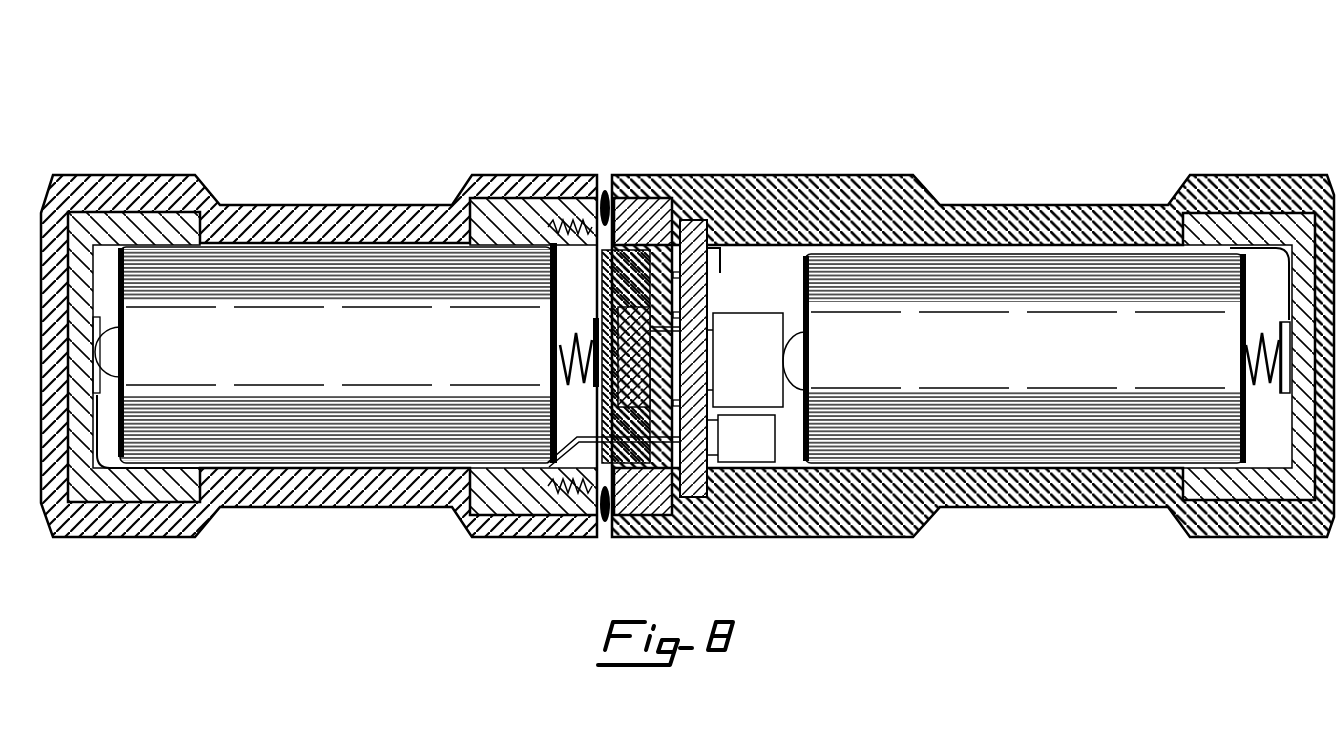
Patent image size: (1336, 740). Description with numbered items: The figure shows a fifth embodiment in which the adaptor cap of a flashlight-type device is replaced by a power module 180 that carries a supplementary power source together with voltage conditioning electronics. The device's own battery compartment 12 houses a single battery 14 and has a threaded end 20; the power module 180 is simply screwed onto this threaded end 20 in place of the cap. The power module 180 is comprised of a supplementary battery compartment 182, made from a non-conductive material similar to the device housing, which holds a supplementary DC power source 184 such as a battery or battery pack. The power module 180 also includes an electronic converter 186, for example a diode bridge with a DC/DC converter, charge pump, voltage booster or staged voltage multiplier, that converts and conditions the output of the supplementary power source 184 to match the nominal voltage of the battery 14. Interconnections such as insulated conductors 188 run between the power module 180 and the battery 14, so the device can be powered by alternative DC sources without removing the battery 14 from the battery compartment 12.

The battery compartment 12 is at (343, 210).
The battery 14 is at (192, 288).
The threaded end 20 is at (526, 207).
The power module 180 is at (870, 192).
The supplementary battery compartment 182 is at (1046, 507).
The supplementary DC power source 184 is at (1118, 280).
The electronic converter 186 is at (713, 387).
The insulated conductors 188 is at (240, 467).